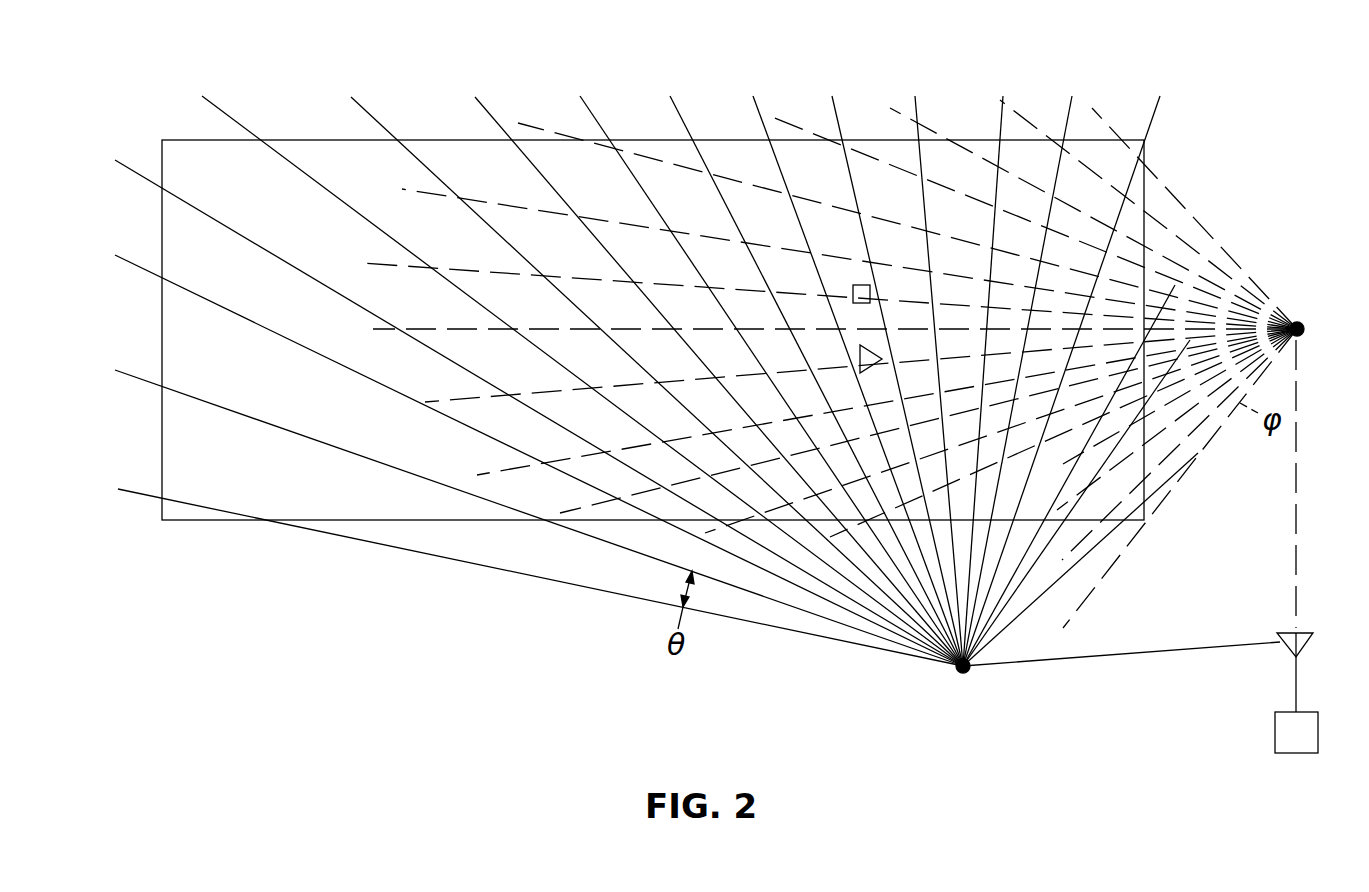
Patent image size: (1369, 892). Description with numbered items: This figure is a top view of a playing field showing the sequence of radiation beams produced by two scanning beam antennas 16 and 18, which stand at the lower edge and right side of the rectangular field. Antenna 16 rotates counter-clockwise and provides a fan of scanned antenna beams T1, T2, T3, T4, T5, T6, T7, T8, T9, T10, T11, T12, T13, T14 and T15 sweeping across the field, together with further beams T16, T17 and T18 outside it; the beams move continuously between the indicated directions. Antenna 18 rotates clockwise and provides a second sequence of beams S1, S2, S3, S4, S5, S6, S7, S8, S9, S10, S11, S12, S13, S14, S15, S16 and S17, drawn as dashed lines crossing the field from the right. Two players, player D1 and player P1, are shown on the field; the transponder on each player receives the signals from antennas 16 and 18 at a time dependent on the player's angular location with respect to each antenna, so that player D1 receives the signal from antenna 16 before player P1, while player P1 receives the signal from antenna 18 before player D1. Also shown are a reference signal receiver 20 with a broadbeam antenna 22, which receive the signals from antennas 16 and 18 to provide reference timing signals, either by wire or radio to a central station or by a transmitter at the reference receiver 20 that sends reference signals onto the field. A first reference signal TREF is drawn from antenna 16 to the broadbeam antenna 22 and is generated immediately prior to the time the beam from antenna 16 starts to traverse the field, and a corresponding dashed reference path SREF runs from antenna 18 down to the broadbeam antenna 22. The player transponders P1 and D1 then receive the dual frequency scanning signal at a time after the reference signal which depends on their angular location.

The scanning beam antenna 16 is at (963, 666).
The scanning beam antenna 18 is at (1297, 329).
The reference signal receiver 20 is at (1273, 732).
The broadbeam antenna 22 is at (1278, 628).
The scanned antenna beam T1 is at (1072, 365).
The scanned antenna beam T2 is at (1024, 365).
The scanned antenna beam T3 is at (991, 365).
The scanned antenna beam T4 is at (931, 365).
The scanned antenna beam T5 is at (887, 365).
The scanned antenna beam T6 is at (849, 365).
The scanned antenna beam T7 is at (806, 365).
The scanned antenna beam T8 is at (763, 365).
The scanned antenna beam T9 is at (709, 365).
The scanned antenna beam T10 is at (644, 365).
The scanned antenna beam T11 is at (573, 365).
The scanned antenna beam T12 is at (508, 404).
The scanned antenna beam T13 is at (508, 452).
The scanned antenna beam T14 is at (508, 509).
The scanned antenna beam T15 is at (508, 569).
The scanned antenna beam T16 is at (1116, 391).
The scanned antenna beam T17 is at (1108, 462).
The scanned antenna beam T18 is at (1198, 453).
The scanned antenna beam S1 is at (1180, 480).
The scanned antenna beam S2 is at (1139, 481).
The scanned antenna beam S3 is at (1100, 477).
The scanned antenna beam S4 is at (1065, 463).
The scanned antenna beam S5 is at (842, 531).
The scanned antenna beam S6 is at (783, 507).
The scanned antenna beam S7 is at (928, 421).
The scanned antenna beam S8 is at (887, 402).
The scanned antenna beam S9 is at (861, 365).
The scanned antenna beam S10 is at (835, 313).
The scanned antenna beam S11 is at (829, 286).
The scanned antenna beam S12 is at (849, 259).
The scanned antenna beam S13 is at (907, 226).
The scanned antenna beam S14 is at (787, 122).
The scanned antenna beam S15 is at (1093, 213).
The scanned antenna beam S16 is at (1175, 205).
The scanned antenna beam S17 is at (1197, 218).
The player D1 is at (855, 285).
The player P1 is at (860, 356).
The first reference signal TREF is at (1121, 668).
The reference signal SREF is at (1324, 484).